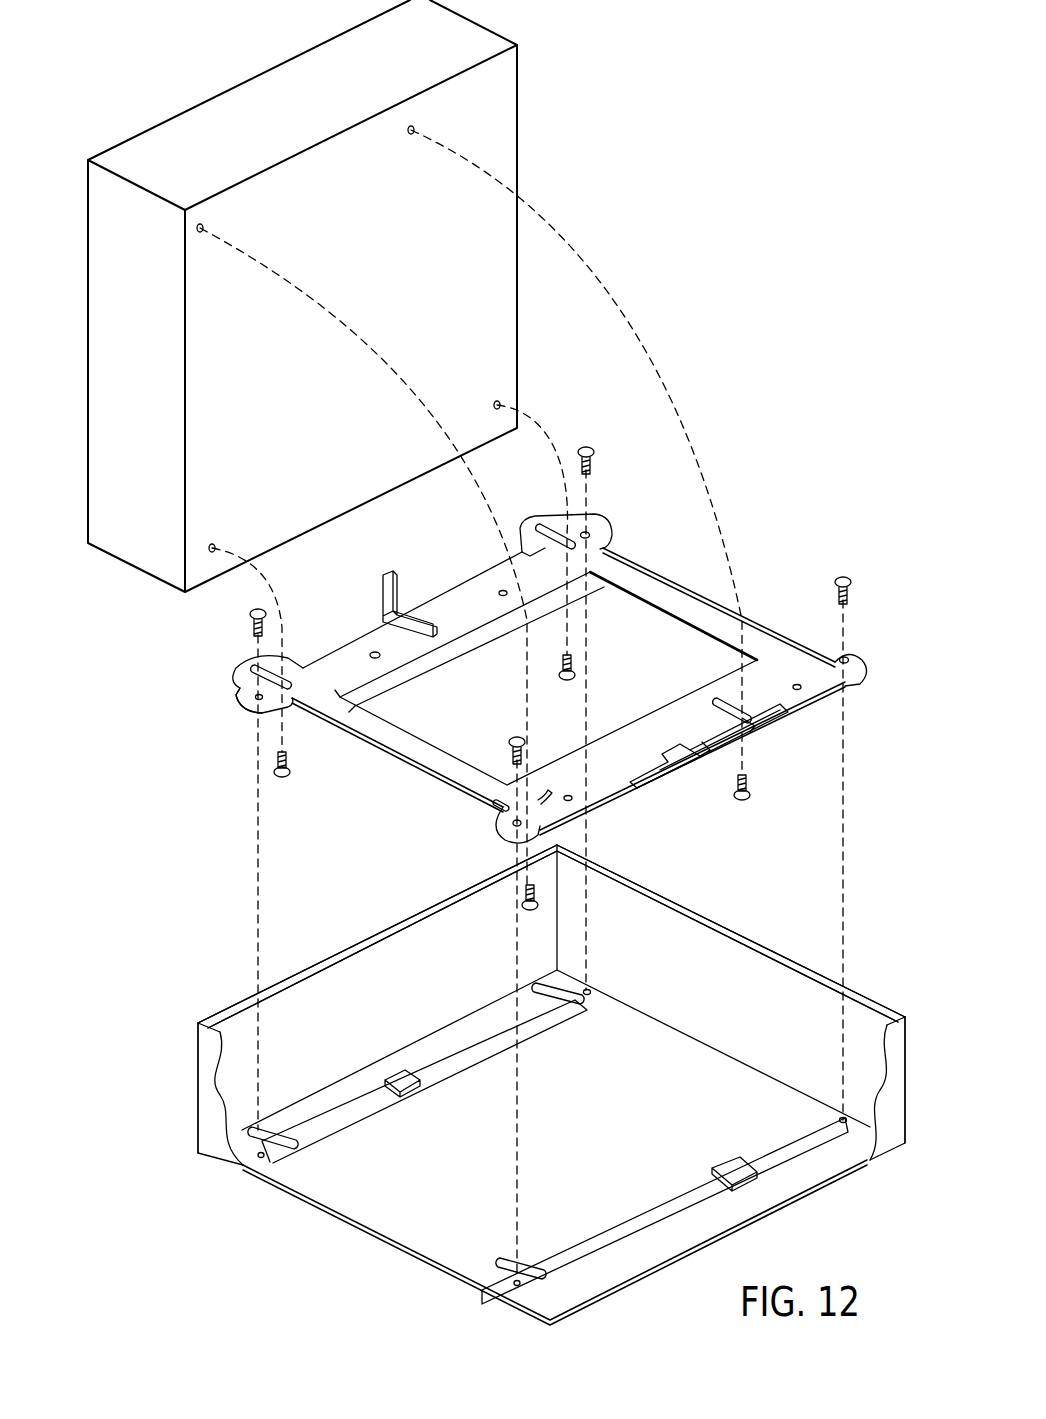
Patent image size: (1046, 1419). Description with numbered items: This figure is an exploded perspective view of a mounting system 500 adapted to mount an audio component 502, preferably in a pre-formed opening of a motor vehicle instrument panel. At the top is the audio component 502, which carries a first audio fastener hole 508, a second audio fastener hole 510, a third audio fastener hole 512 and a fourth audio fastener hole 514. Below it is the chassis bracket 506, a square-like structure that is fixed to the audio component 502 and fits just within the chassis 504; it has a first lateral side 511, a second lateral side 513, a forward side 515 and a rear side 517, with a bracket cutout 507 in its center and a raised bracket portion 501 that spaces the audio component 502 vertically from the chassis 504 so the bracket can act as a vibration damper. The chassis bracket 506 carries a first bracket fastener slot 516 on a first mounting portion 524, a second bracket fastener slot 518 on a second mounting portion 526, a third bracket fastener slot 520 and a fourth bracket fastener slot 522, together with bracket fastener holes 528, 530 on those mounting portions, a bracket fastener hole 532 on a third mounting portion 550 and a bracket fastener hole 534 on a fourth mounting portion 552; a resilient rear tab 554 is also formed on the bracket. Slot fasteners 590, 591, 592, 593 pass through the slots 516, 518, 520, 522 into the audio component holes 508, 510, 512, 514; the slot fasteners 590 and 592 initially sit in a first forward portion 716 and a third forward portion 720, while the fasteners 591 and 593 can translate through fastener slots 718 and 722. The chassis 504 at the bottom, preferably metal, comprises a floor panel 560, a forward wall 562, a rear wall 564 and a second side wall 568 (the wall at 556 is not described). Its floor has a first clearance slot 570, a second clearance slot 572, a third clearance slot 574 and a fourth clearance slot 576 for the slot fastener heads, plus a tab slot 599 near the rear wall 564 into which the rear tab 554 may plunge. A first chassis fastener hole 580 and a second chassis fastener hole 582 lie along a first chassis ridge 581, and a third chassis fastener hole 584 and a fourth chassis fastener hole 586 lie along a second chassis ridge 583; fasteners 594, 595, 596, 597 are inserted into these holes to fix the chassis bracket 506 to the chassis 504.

The mounting system 500 is at (770, 436).
The raised bracket portion 501 is at (652, 748).
The audio component 502 is at (252, 95).
The chassis 504 is at (870, 956).
The chassis bracket 506 is at (447, 714).
The bracket cutout 507 is at (735, 592).
The first audio fastener hole 508 is at (214, 544).
The second audio fastener hole 510 is at (496, 400).
The first lateral side 511 is at (430, 778).
The third audio fastener hole 512 is at (205, 226).
The second lateral side 513 is at (680, 598).
The fourth audio fastener hole 514 is at (406, 133).
The forward side 515 is at (650, 802).
The first bracket fastener slot 516 is at (236, 678).
The rear side 517 is at (340, 650).
The second bracket fastener slot 518 is at (556, 526).
The third bracket fastener slot 520 is at (495, 806).
The fourth bracket fastener slot 522 is at (727, 700).
The first mounting portion 524 is at (252, 663).
The second mounting portion 526 is at (538, 528).
The bracket fastener hole 528 is at (252, 714).
The bracket fastener hole 530 is at (590, 533).
The bracket fastener hole 532 is at (498, 832).
The bracket fastener hole 534 is at (858, 658).
The third mounting portion 550 is at (578, 824).
The fourth mounting portion 552 is at (862, 680).
The rear tab 554 is at (386, 573).
The tray side wall 556 is at (203, 1106).
The floor panel 560 is at (363, 1226).
The forward wall 562 is at (894, 1152).
The rear wall 564 is at (383, 928).
The second side wall 568 is at (742, 932).
The first clearance slot 570 is at (276, 1128).
The second clearance slot 572 is at (577, 1008).
The third clearance slot 574 is at (527, 1264).
The fourth clearance slot 576 is at (730, 1163).
The first chassis fastener hole 580 is at (259, 1159).
The first chassis ridge 581 is at (352, 1114).
The second chassis fastener hole 582 is at (592, 992).
The second chassis ridge 583 is at (668, 1206).
The third chassis fastener hole 584 is at (516, 1287).
The fourth chassis fastener hole 586 is at (838, 1121).
The first slot fastener 590 is at (288, 782).
The slot fastener 591 is at (578, 675).
The third slot fastener 592 is at (522, 907).
The slot fastener 593 is at (746, 803).
The first fastener 594 is at (264, 607).
The second fastener 595 is at (589, 445).
The third fastener 596 is at (514, 737).
The fourth fastener 597 is at (845, 576).
The tab slot 599 is at (422, 1092).
The first forward portion 716 is at (257, 699).
The fastener slot 718 is at (535, 550).
The third forward portion 720 is at (546, 790).
The fastener slot 722 is at (750, 730).